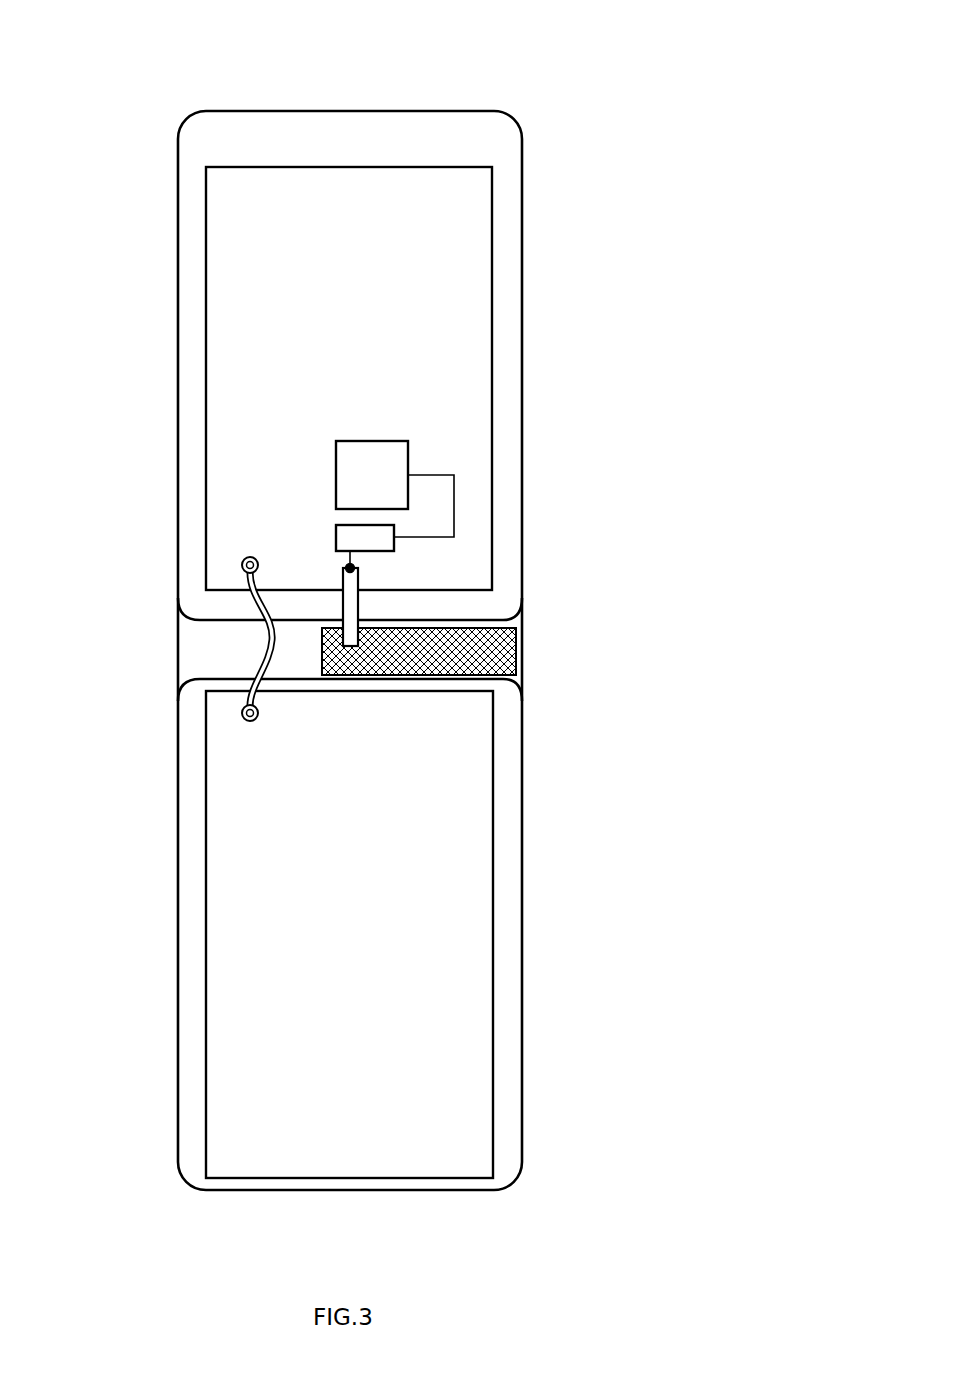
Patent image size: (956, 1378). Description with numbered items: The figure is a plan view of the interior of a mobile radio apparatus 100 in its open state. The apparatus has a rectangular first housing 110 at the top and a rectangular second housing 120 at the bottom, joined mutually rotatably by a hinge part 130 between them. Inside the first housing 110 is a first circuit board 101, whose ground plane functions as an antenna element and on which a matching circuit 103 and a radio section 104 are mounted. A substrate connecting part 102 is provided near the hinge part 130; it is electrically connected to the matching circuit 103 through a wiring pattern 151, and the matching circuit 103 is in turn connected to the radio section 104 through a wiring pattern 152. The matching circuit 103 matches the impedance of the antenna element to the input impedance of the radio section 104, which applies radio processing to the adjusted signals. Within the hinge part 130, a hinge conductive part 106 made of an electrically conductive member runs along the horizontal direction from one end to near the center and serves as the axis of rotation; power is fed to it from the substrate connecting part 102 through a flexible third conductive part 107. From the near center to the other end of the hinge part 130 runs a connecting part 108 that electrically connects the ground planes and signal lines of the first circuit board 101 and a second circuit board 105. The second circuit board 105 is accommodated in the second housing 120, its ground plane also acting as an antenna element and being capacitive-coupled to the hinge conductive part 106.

The mobile radio apparatus 100 is at (583, 76).
The first housing 110 is at (345, 110).
The second housing 120 is at (523, 1113).
The hinge part 130 is at (522, 655).
The first circuit board 101 is at (235, 268).
The second circuit board 105 is at (235, 1087).
The substrate connecting part 102 is at (345, 568).
The matching circuit 103 is at (385, 537).
The radio section 104 is at (379, 452).
The hinge conductive part 106 is at (517, 630).
The third conductive part 107 is at (350, 590).
The connecting part 108 is at (268, 647).
The wiring pattern 151 is at (352, 568).
The wiring pattern 152 is at (425, 473).